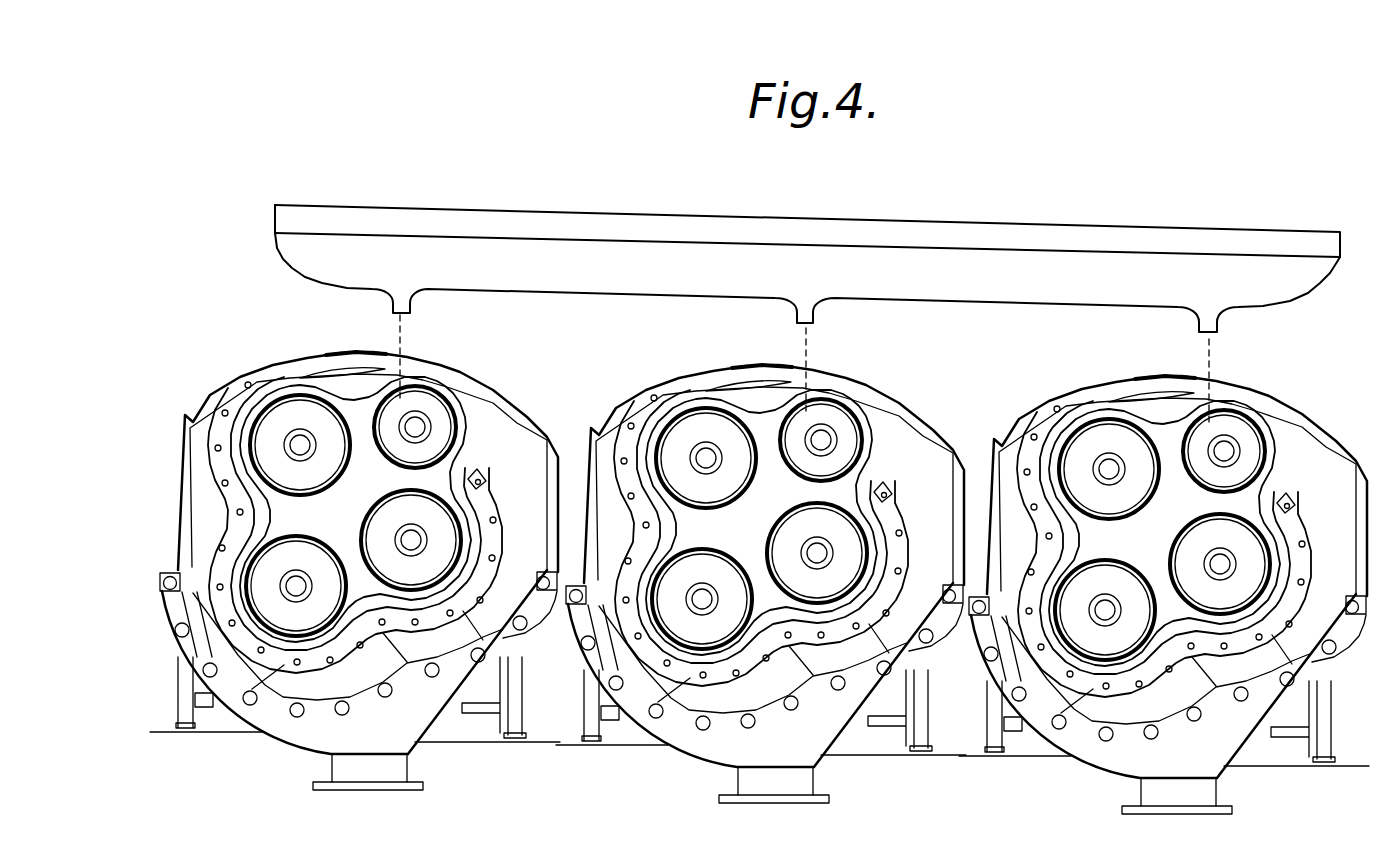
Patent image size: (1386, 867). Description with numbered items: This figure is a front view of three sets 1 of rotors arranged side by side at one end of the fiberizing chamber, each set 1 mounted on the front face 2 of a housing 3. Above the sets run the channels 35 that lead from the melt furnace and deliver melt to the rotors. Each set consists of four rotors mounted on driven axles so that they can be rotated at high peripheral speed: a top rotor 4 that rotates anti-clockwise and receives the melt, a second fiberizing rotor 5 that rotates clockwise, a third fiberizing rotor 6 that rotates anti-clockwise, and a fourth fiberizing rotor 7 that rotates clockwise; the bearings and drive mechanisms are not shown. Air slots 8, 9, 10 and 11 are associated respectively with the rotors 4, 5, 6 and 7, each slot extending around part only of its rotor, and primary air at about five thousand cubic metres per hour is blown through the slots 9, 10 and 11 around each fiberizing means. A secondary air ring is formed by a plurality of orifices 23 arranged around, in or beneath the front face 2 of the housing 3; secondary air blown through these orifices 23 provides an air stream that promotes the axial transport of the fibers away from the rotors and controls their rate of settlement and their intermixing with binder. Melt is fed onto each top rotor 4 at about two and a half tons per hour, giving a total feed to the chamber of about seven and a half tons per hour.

The set of rotors 1 is at (473, 428).
The front face 2 is at (323, 512).
The housing 3 is at (195, 407).
The top rotor 4 is at (422, 406).
The second fiberizing rotor 5 is at (296, 408).
The third fiberizing rotor 6 is at (438, 522).
The fourth fiberizing rotor 7 is at (270, 585).
The air slot 8 is at (447, 398).
The air slot 9 is at (257, 435).
The air slot 10 is at (368, 472).
The air slot 11 is at (243, 605).
The orifices 23 is at (294, 714).
The channels 35 is at (978, 262).